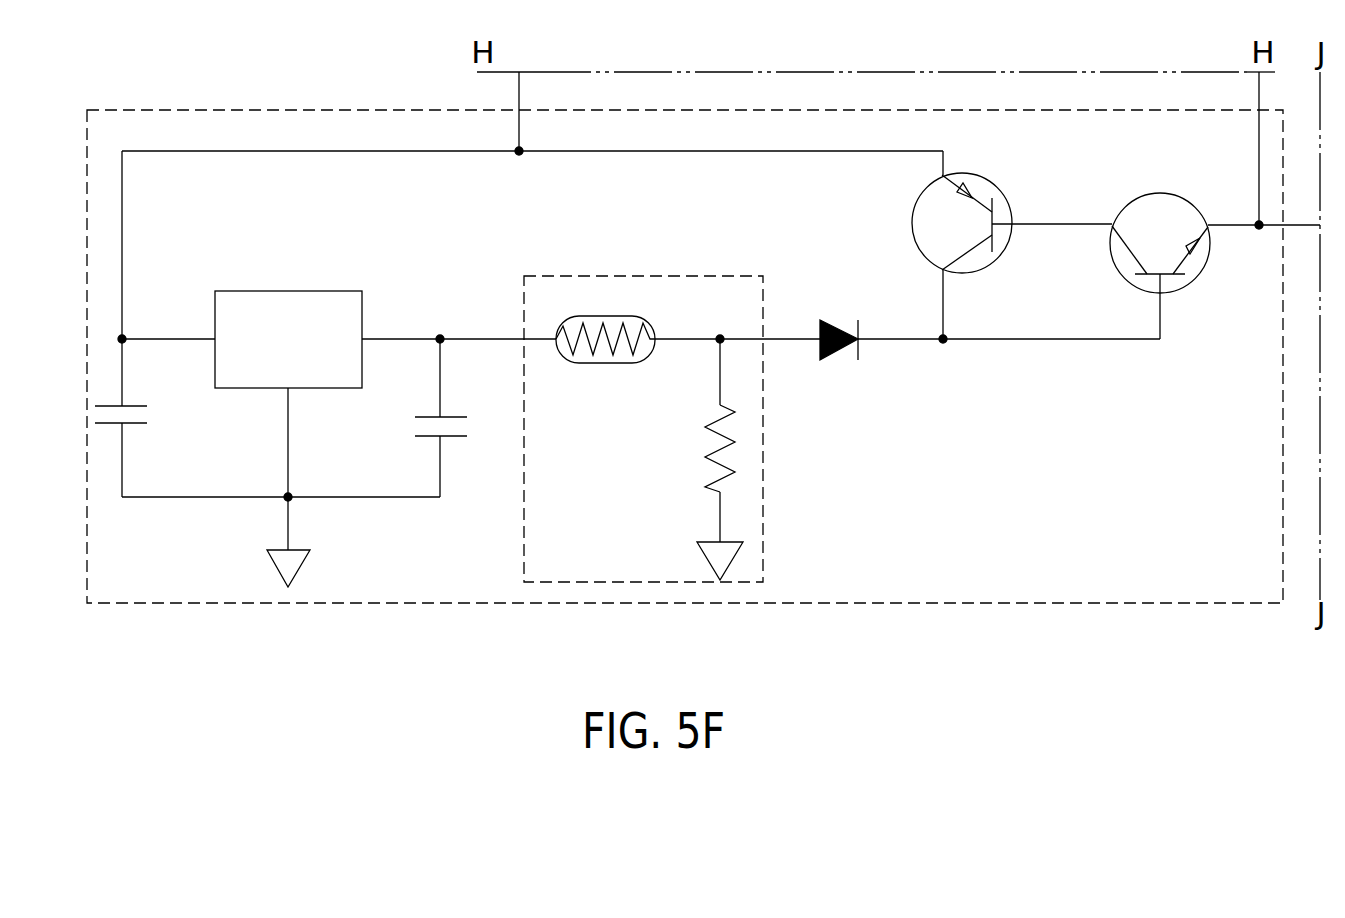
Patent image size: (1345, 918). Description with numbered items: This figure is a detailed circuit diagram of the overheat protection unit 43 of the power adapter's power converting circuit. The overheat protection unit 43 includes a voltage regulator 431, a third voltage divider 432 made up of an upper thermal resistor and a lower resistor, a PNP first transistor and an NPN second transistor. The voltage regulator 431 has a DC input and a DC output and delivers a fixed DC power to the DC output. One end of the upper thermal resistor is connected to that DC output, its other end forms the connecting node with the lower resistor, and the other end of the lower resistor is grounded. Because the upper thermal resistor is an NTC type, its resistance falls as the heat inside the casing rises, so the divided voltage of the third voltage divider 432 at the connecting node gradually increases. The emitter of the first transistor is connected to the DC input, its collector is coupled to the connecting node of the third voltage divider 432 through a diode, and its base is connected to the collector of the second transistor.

The overheat protection unit 43 is at (318, 110).
The voltage regulator 431 is at (263, 296).
The third voltage divider 432 is at (688, 273).